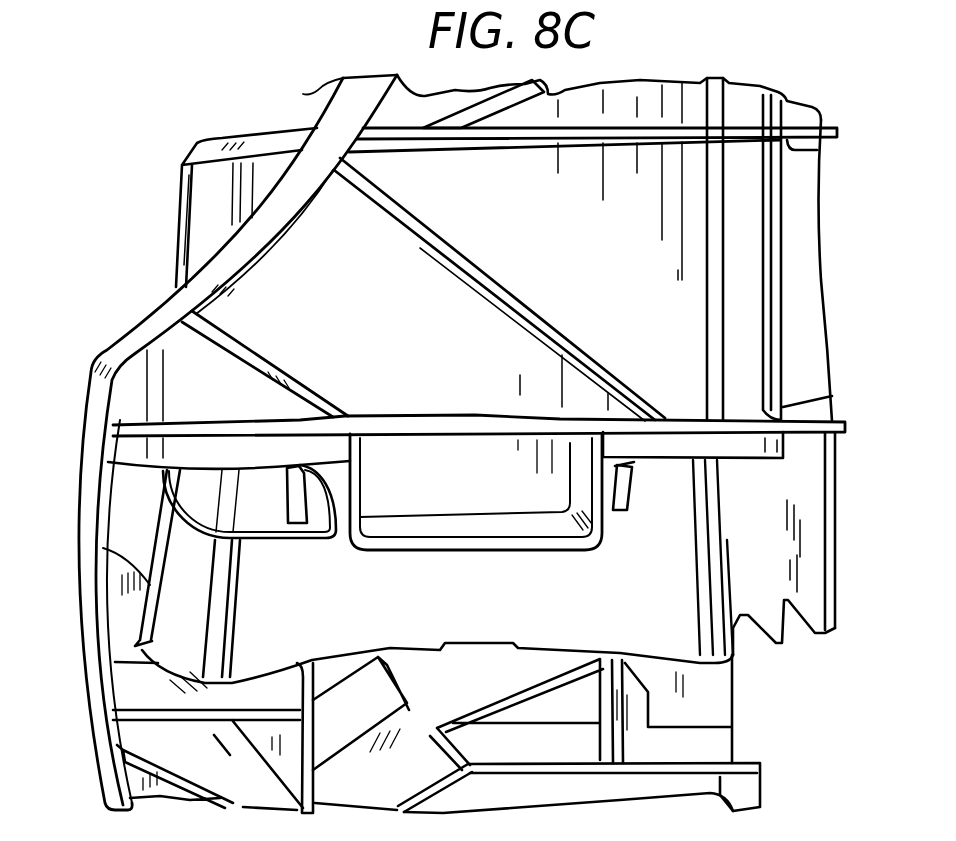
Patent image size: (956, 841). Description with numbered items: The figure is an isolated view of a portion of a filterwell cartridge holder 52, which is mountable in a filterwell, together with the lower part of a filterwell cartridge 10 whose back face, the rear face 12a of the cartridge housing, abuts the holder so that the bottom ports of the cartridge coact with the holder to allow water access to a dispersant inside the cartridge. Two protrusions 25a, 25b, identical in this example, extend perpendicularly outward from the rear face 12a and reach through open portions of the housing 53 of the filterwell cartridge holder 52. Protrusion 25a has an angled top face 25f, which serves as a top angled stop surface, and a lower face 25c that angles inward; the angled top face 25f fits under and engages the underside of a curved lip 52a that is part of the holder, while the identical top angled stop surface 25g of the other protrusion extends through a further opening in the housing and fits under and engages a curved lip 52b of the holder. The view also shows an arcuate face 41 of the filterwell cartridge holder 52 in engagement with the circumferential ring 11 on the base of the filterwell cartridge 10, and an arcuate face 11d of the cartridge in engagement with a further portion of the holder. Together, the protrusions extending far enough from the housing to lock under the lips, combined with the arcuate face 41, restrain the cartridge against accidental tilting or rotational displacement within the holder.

The filterwell cartridge 10 is at (198, 152).
The rear face of cartridge housing 12a is at (243, 197).
The filterwell cartridge holder 52 is at (770, 100).
The housing of filterwell cartridge holder 53 is at (813, 233).
The top angled stop surface 25g is at (627, 463).
The curved lip 52b is at (737, 460).
The protrusion 25a is at (636, 483).
The angled top face 25f is at (293, 470).
The curved lip 52a is at (168, 504).
The protrusion 25b is at (258, 507).
The lower face 25c is at (284, 490).
The arcuate face 11d is at (168, 602).
The arcuate face 41 is at (125, 628).
The circumferential ring 11 is at (382, 612).